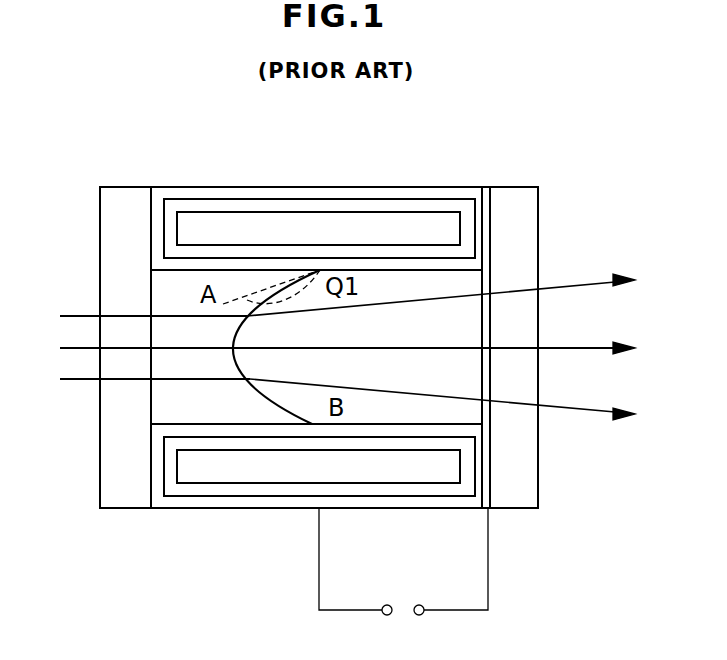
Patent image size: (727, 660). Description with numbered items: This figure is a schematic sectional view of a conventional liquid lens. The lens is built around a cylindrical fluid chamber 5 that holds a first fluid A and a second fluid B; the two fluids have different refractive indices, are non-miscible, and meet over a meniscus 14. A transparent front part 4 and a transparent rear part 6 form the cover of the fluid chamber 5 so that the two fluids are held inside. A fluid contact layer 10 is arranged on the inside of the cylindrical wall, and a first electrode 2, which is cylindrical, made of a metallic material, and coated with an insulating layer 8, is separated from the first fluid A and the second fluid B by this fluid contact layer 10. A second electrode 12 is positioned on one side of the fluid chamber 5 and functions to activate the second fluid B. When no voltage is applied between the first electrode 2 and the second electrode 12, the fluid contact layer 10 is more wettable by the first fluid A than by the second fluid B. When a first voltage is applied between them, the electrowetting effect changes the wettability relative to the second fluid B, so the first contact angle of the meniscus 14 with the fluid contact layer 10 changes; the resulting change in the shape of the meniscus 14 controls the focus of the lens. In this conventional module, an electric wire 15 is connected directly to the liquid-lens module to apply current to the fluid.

The first electrode 2 is at (388, 222).
The transparent front part 4 is at (125, 198).
The fluid chamber 5 is at (462, 282).
The transparent rear part 6 is at (511, 198).
The insulating layer 8 is at (210, 251).
The fluid contact layer 10 is at (277, 264).
The second electrode 12 is at (483, 413).
The meniscus 14 is at (263, 398).
The electric wire 15 is at (488, 548).